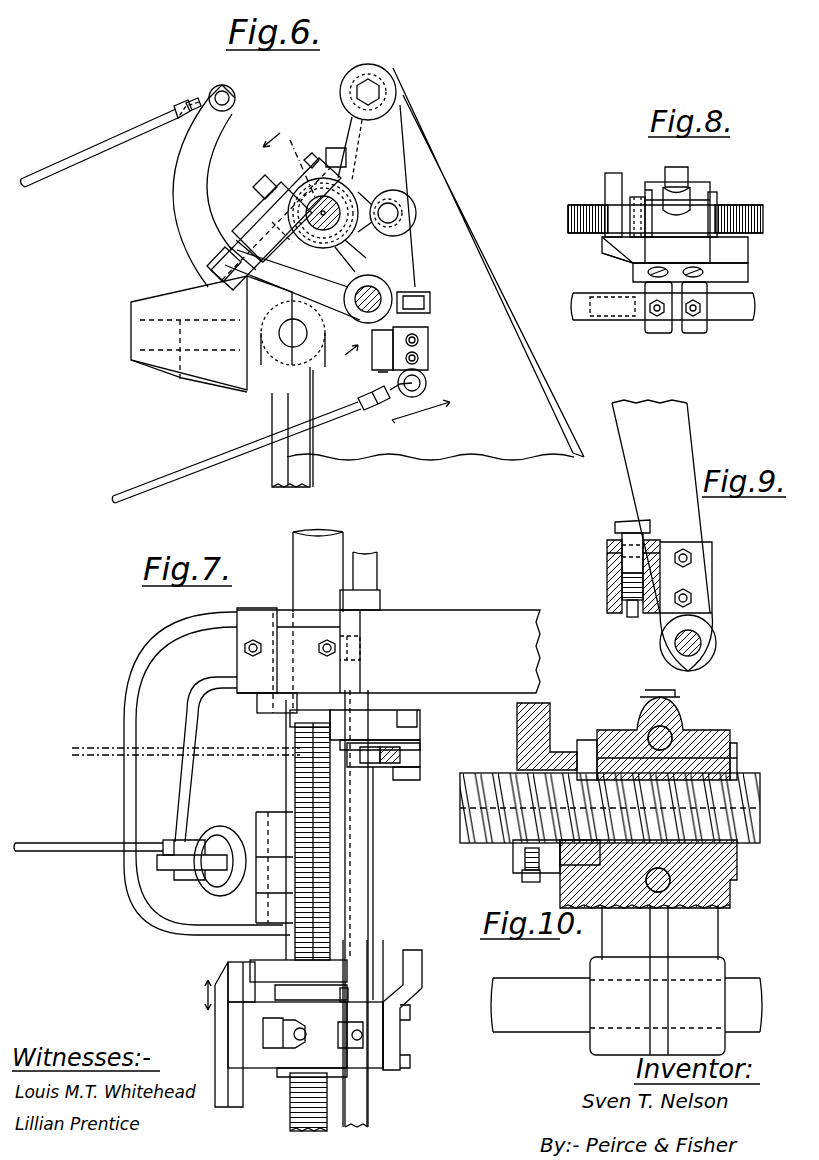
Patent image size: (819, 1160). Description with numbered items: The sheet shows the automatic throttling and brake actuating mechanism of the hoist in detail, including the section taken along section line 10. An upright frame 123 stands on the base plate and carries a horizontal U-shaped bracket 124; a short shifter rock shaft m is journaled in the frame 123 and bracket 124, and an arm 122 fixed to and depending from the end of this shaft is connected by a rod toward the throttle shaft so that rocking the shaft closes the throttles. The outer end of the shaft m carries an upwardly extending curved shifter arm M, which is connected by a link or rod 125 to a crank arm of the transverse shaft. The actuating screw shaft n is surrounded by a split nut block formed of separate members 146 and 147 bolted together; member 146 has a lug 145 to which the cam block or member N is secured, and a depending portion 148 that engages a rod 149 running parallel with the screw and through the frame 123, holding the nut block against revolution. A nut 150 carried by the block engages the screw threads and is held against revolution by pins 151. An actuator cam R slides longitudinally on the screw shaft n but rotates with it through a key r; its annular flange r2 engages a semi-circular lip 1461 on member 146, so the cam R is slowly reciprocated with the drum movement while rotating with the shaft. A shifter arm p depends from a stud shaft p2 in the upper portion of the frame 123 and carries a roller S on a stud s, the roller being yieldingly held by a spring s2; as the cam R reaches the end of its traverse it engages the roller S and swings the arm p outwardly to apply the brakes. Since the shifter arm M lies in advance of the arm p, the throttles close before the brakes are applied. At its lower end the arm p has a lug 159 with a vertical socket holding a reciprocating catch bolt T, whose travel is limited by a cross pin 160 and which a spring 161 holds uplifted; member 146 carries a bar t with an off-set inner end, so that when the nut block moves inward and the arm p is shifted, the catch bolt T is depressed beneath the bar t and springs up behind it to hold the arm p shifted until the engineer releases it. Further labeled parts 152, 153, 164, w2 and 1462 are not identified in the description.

In FIG. 6, the section line 10 is at (312, 244).
In FIG. 6, the arm 122 is at (300, 470).
In FIG. 6, the upright frame 123 is at (430, 443).
In FIG. 7, the upright frame 123 is at (422, 622).
In FIG. 6, the U-shaped bracket 124 is at (135, 334).
In FIG. 7, the U-shaped bracket 124 is at (135, 787).
In FIG. 6, the link or rod 125 is at (90, 144).
In FIG. 7, the link or rod 125 is at (88, 845).
In FIG. 6, the lug 145 is at (253, 222).
In FIG. 8, the lug 145 is at (633, 250).
In FIG. 7, the lug 145 is at (235, 1056).
In FIG. 6, the nut block member 146 is at (258, 187).
In FIG. 8, the nut block member 146 is at (717, 208).
In FIG. 10, the nut block member 146 is at (722, 900).
In FIG. 7, the nut block member 146 is at (265, 1050).
In FIG. 7, the semi-circular lip 1461 is at (330, 985).
In FIG. 8, the spacer block 1462 is at (632, 195).
In FIG. 10, the spacer block 1462 is at (562, 865).
In FIG. 6, the nut block member 147 is at (380, 188).
In FIG. 8, the nut block member 147 is at (705, 185).
In FIG. 7, the nut block member 147 is at (328, 1060).
In FIG. 6, the depending portion 148 is at (373, 270).
In FIG. 8, the depending portion 148 is at (707, 295).
In FIG. 10, the depending portion 148 is at (712, 975).
In FIG. 7, the depending portion 148 is at (370, 1052).
In FIG. 6, the rod 149 is at (390, 290).
In FIG. 8, the rod 149 is at (710, 328).
In FIG. 10, the rod 149 is at (526, 985).
In FIG. 7, the rod 149 is at (360, 936).
In FIG. 6, the nut 150 is at (370, 247).
In FIG. 8, the nut 150 is at (712, 198).
In FIG. 10, the nut 150 is at (738, 775).
In FIG. 7, the nut 150 is at (290, 1090).
In FIG. 6, the pins 151 is at (360, 160).
In FIG. 10, the pins 151 is at (695, 730).
In FIG. 6, the collar 152 is at (210, 270).
In FIG. 7, the collar 152 is at (235, 830).
In FIG. 6, the connecting rod 153 is at (281, 443).
In FIG. 7, the connecting rod 153 is at (186, 759).
In FIG. 6, the bracket or lug 159 is at (395, 348).
In FIG. 9, the bracket or lug 159 is at (607, 573).
In FIG. 9, the cross pin 160 is at (610, 555).
In FIG. 9, the spring 161 is at (607, 591).
In FIG. 7, the guide block 164 is at (290, 718).
In FIG. 6, the curved shifter arm M is at (173, 187).
In FIG. 7, the curved shifter arm M is at (157, 862).
In FIG. 6, the cam block or member N is at (233, 238).
In FIG. 8, the cam block or member N is at (748, 253).
In FIG. 7, the cam block or member N is at (222, 1026).
In FIG. 6, the actuator cam R is at (286, 190).
In FIG. 8, the actuator cam R is at (607, 173).
In FIG. 10, the actuator cam R is at (517, 729).
In FIG. 7, the actuator cam R is at (255, 965).
In FIG. 6, the roller S is at (420, 215).
In FIG. 7, the roller S is at (420, 755).
In FIG. 6, the stud s is at (392, 213).
In FIG. 7, the stud s is at (373, 768).
In FIG. 7, the spring s2 is at (420, 744).
In FIG. 6, the catch bolt T is at (422, 332).
In FIG. 9, the catch bolt T is at (620, 520).
In FIG. 7, the catch bolt T is at (378, 790).
In FIG. 6, the bar t is at (428, 298).
In FIG. 7, the bar t is at (418, 978).
In FIG. 6, the actuating screw shaft n is at (335, 232).
In FIG. 8, the actuating screw shaft n is at (568, 230).
In FIG. 10, the actuating screw shaft n is at (760, 806).
In FIG. 7, the actuating screw shaft n is at (335, 884).
In FIG. 6, the short shaft m is at (313, 370).
In FIG. 6, the shifter arm p is at (410, 322).
In FIG. 9, the shifter arm p is at (685, 517).
In FIG. 7, the shifter arm p is at (418, 726).
In FIG. 6, the stud shaft p2 is at (377, 87).
In FIG. 7, the stud shaft p2 is at (372, 590).
In FIG. 10, the key r is at (520, 845).
In FIG. 8, the annular flange r2 is at (645, 192).
In FIG. 10, the annular flange r2 is at (585, 740).
In FIG. 7, the annular flange r2 is at (350, 993).
In FIG. 7, the shaft w2 is at (330, 548).